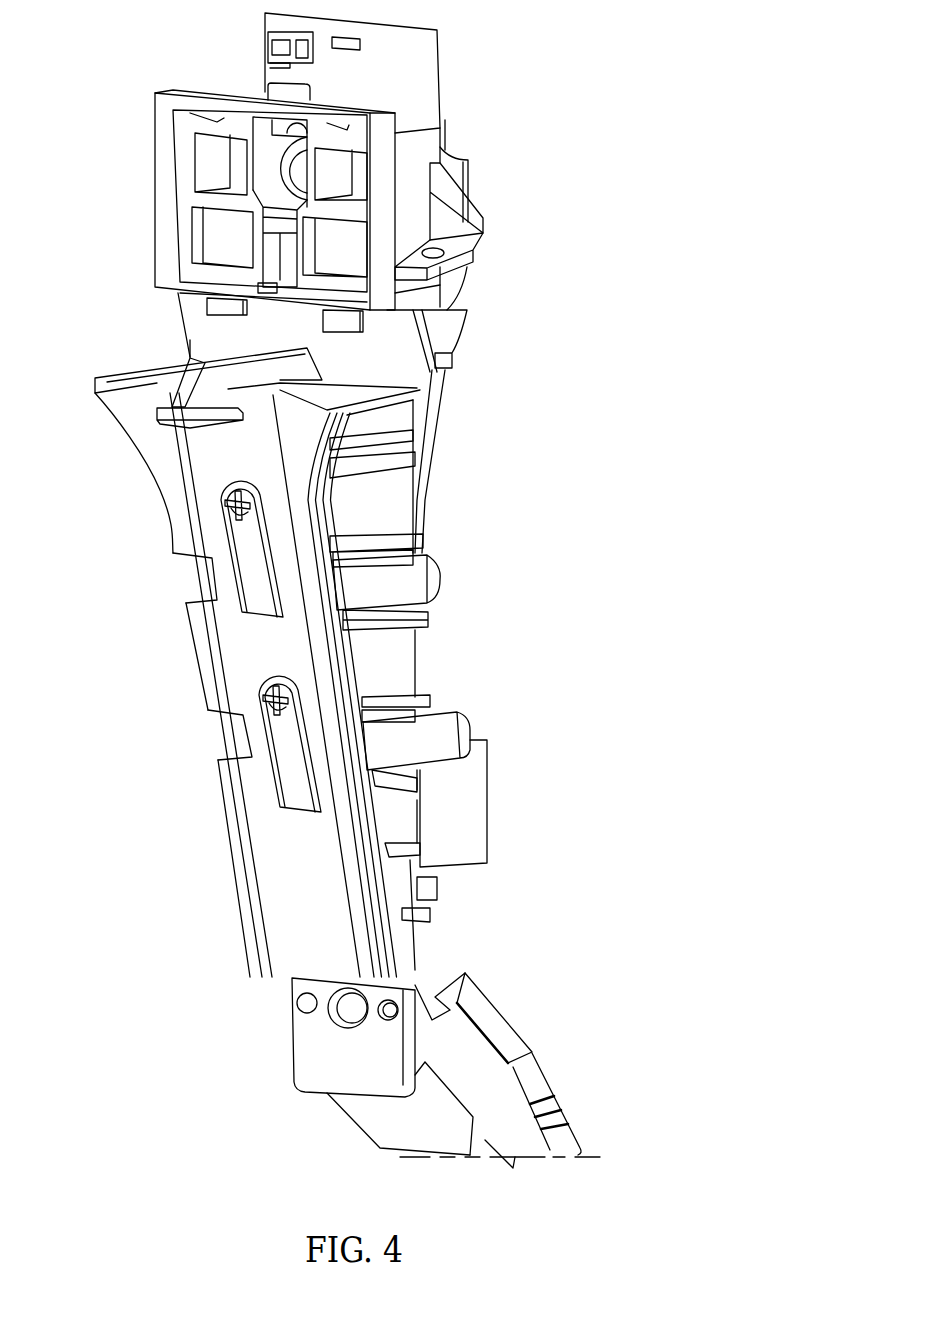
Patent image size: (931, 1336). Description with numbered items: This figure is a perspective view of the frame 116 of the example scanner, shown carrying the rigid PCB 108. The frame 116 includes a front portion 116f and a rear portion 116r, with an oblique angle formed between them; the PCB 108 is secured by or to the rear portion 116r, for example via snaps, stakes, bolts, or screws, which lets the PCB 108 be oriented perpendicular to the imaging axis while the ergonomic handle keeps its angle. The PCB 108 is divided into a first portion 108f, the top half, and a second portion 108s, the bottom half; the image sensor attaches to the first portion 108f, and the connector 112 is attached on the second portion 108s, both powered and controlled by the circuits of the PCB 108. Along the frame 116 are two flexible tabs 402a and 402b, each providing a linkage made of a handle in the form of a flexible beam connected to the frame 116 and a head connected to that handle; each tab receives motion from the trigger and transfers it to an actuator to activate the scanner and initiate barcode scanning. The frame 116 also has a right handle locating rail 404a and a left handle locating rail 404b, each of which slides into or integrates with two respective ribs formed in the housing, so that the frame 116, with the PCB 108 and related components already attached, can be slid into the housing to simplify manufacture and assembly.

The PCB 108 is at (422, 415).
The first portion 108f is at (418, 73).
The second portion 108s is at (313, 1060).
The connector 112 is at (495, 1070).
The frame 116 is at (285, 900).
The front portion 116f is at (277, 858).
The rear portion 116r is at (418, 660).
The flexible tab 402a is at (255, 585).
The flexible tab 402b is at (290, 762).
The right handle locating rail 404a is at (148, 470).
The left handle locating rail 404b is at (331, 508).